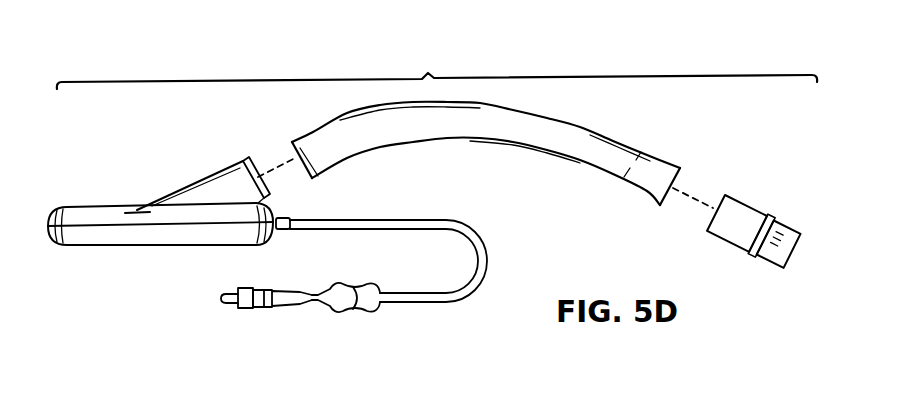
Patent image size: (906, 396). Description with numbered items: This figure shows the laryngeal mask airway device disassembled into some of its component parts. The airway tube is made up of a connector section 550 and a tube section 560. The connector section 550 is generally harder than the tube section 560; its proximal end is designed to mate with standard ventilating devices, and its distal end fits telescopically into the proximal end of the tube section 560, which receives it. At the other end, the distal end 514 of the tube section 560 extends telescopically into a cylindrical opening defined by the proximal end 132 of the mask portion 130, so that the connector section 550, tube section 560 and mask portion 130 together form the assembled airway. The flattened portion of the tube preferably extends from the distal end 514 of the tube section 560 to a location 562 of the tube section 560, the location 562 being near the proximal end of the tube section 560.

The mask portion 130 is at (160, 176).
The proximal end of mask portion 132 is at (250, 157).
The distal end of tube section 514 is at (290, 144).
The tube section 560 is at (471, 160).
The location of tube section 562 is at (621, 176).
The connector section 550 is at (752, 206).